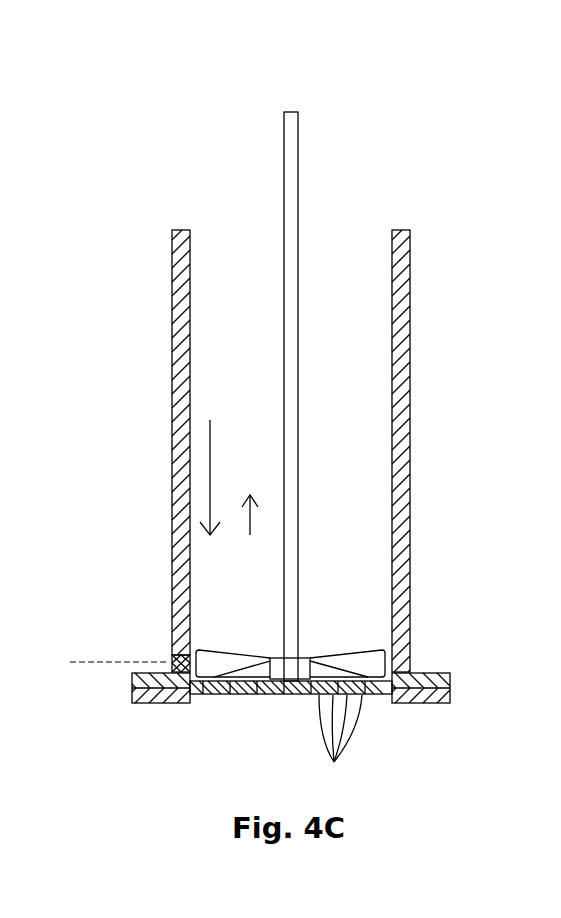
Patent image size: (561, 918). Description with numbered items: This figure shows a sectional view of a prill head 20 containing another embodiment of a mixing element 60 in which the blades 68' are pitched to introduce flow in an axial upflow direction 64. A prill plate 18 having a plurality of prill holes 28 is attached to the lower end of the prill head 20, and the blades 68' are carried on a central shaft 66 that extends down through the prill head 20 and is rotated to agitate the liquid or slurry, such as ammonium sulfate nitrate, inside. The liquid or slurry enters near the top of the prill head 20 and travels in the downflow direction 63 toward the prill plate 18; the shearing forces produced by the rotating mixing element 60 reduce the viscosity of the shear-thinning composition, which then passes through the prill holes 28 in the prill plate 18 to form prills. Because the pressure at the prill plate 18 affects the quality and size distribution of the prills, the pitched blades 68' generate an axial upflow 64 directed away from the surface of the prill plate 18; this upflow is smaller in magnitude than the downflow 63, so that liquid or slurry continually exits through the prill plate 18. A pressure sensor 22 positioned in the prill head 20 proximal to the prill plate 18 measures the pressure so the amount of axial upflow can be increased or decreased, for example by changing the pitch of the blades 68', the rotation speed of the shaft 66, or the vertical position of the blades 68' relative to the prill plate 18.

The mixing element 60 is at (222, 131).
The shaft 66 is at (299, 180).
The prill head 20 is at (412, 354).
The downflow direction 63 is at (213, 487).
The axial upflow direction 64 is at (250, 510).
The blades 68' is at (290, 614).
The pressure sensor 22 is at (170, 657).
The prill plate 18 is at (227, 696).
The prill holes 28 is at (340, 747).